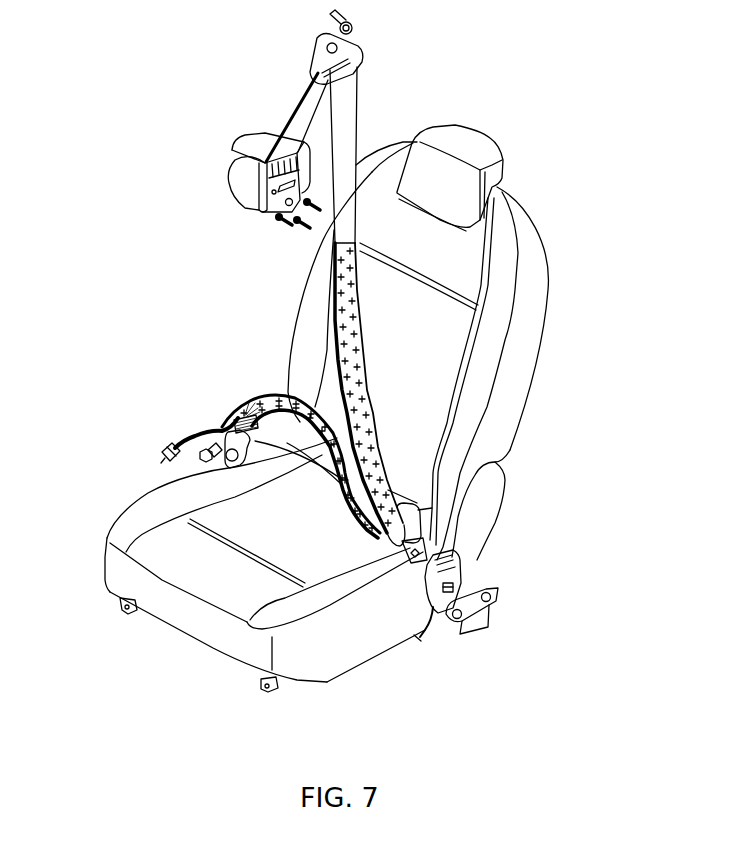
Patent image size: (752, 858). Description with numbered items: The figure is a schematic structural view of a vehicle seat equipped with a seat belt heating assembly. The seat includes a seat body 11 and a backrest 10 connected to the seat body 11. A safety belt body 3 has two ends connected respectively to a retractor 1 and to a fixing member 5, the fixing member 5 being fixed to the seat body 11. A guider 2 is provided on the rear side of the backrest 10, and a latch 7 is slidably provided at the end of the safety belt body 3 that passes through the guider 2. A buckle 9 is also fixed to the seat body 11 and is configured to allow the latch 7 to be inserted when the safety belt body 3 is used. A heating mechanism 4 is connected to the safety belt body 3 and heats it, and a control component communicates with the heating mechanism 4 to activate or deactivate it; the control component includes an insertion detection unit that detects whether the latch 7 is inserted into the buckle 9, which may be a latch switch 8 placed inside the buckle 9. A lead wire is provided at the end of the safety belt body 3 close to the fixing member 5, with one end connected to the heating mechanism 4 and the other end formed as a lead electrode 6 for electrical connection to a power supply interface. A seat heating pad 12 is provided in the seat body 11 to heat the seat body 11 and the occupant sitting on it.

The retractor 1 is at (265, 158).
The guider 2 is at (318, 72).
The safety belt body 3 is at (347, 147).
The heating mechanism 4 is at (333, 330).
The fixing member 5 is at (236, 430).
The lead electrode 6 is at (187, 433).
The latch 7 is at (410, 545).
The latch switch 8 is at (445, 612).
The buckle 9 is at (449, 592).
The backrest 10 is at (502, 378).
The seat body 11 is at (160, 592).
The seat heating pad 12 is at (268, 505).